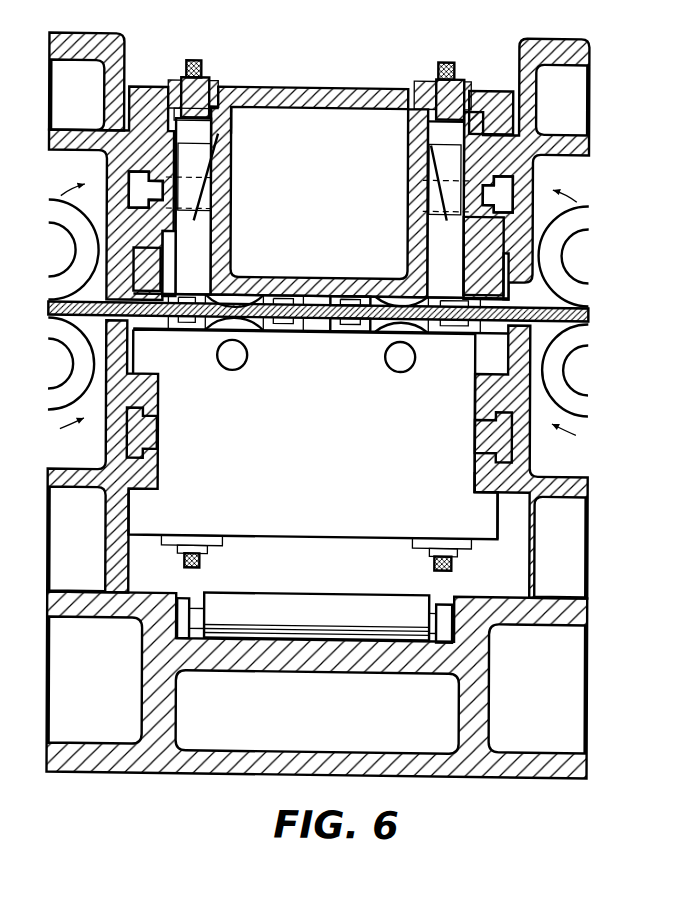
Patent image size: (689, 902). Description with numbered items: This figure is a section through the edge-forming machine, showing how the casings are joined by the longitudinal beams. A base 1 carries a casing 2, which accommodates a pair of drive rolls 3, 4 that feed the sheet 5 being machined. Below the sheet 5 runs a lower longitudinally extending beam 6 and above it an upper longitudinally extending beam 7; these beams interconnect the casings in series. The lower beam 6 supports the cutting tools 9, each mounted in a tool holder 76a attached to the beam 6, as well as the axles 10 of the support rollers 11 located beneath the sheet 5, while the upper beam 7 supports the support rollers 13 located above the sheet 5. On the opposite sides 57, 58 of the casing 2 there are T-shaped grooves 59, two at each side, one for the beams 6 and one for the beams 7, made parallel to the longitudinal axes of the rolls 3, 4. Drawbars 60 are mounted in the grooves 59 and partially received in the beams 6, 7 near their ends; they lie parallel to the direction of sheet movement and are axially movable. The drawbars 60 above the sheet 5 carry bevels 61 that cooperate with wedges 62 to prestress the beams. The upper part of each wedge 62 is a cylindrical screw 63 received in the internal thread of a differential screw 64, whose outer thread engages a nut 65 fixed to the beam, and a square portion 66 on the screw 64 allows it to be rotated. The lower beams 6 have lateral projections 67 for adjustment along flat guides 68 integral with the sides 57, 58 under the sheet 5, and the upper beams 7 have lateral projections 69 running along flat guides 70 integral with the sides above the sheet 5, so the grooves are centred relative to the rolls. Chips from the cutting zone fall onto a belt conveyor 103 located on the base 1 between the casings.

The base 1 is at (480, 688).
The casing 2 is at (112, 550).
The drive roll 3 is at (573, 216).
The drive roll 4 is at (573, 417).
The sheet 5 is at (587, 315).
The lower longitudinally extending beam 6 is at (303, 520).
The upper longitudinally extending beam 7 is at (310, 88).
The cutting tool 9 is at (345, 300).
The axle 10 is at (238, 366).
The support roller 11 is at (418, 331).
The support roller 13 is at (238, 287).
The side of casing 57 is at (137, 41).
The side of casing 58 is at (518, 54).
The T-shaped groove 59 is at (170, 242).
The drawbar 60 is at (503, 188).
The bevel 61 is at (195, 187).
The wedge 62 is at (200, 147).
The screw 63 is at (231, 124).
The differential screw 64 is at (216, 82).
The nut 65 is at (172, 84).
The square portion 66 is at (195, 62).
The lateral projection 67 is at (487, 520).
The flat guide 68 is at (476, 482).
The lateral projection 69 is at (140, 106).
The flat guide 70 is at (147, 145).
The tool holder 76a is at (351, 331).
The belt conveyor 103 is at (292, 608).